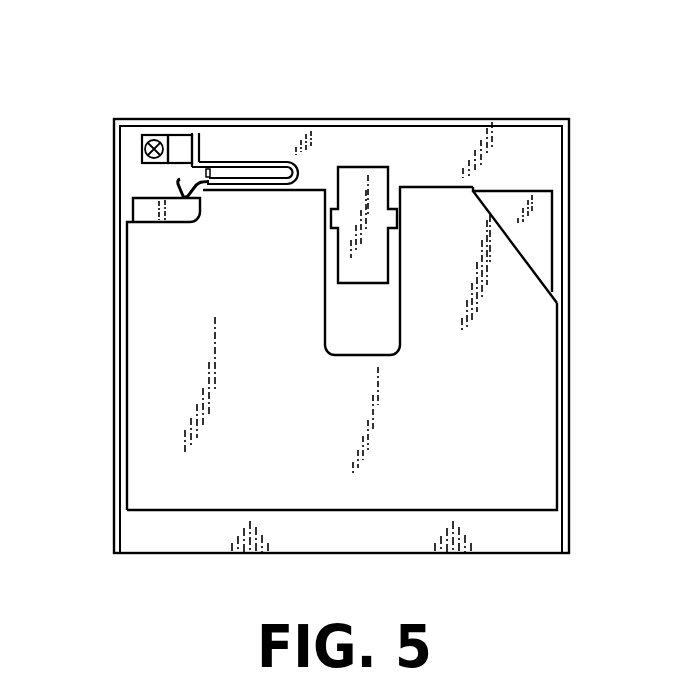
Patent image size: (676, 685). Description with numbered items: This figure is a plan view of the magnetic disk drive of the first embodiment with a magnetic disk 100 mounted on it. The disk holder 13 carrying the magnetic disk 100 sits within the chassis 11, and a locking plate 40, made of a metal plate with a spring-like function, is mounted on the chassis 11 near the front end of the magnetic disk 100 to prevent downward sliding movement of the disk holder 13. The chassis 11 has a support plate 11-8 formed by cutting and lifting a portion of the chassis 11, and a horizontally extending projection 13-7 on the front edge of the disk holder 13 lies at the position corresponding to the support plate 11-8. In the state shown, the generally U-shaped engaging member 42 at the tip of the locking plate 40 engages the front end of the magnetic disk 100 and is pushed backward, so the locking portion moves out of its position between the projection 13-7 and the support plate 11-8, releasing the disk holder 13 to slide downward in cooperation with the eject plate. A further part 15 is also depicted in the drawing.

The chassis 11 is at (538, 163).
The support plate 11-8 is at (217, 162).
The disk holder 13 is at (530, 367).
The projection 13-7 is at (208, 192).
The slot member 15 is at (368, 176).
The locking plate 40 is at (270, 158).
The engaging member 42 is at (177, 183).
The magnetic disk 100 is at (535, 237).